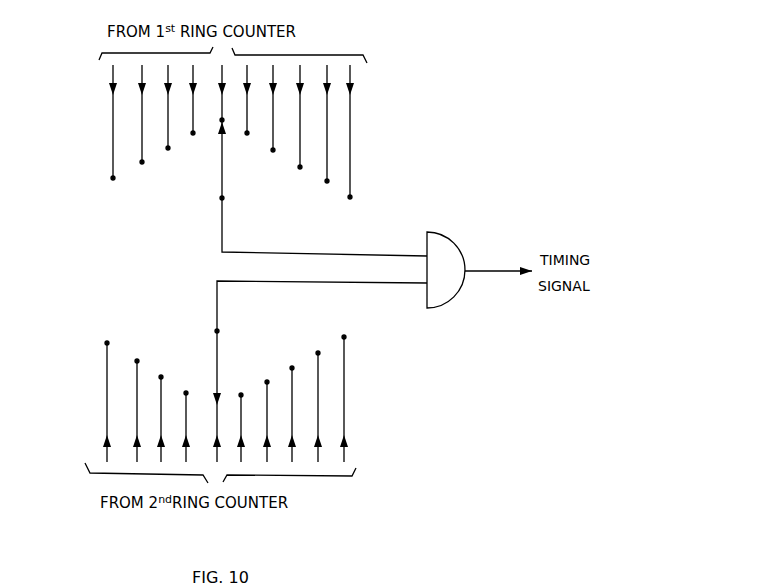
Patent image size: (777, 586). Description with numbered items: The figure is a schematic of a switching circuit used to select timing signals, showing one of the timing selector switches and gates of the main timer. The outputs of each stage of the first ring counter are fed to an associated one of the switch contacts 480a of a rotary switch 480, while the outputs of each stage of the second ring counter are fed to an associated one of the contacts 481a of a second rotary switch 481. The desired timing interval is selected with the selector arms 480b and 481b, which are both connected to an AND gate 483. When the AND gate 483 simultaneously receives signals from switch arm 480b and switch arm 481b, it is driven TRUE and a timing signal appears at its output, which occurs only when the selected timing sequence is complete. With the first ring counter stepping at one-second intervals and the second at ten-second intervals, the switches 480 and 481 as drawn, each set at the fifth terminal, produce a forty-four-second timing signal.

The rotary switch 480 is at (253, 151).
The switch contacts 480a is at (112, 178).
The selector arm 480b is at (222, 163).
The rotary switch 481 is at (233, 382).
The contacts 481a is at (107, 343).
The selector arm 481b is at (217, 348).
The AND gate 483 is at (440, 245).